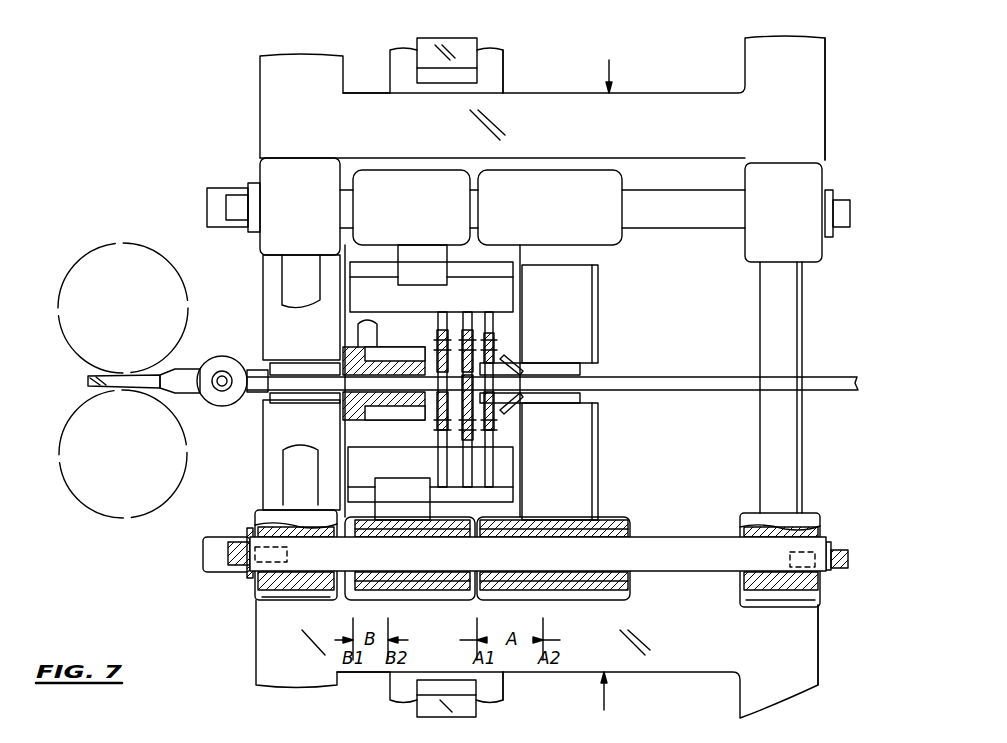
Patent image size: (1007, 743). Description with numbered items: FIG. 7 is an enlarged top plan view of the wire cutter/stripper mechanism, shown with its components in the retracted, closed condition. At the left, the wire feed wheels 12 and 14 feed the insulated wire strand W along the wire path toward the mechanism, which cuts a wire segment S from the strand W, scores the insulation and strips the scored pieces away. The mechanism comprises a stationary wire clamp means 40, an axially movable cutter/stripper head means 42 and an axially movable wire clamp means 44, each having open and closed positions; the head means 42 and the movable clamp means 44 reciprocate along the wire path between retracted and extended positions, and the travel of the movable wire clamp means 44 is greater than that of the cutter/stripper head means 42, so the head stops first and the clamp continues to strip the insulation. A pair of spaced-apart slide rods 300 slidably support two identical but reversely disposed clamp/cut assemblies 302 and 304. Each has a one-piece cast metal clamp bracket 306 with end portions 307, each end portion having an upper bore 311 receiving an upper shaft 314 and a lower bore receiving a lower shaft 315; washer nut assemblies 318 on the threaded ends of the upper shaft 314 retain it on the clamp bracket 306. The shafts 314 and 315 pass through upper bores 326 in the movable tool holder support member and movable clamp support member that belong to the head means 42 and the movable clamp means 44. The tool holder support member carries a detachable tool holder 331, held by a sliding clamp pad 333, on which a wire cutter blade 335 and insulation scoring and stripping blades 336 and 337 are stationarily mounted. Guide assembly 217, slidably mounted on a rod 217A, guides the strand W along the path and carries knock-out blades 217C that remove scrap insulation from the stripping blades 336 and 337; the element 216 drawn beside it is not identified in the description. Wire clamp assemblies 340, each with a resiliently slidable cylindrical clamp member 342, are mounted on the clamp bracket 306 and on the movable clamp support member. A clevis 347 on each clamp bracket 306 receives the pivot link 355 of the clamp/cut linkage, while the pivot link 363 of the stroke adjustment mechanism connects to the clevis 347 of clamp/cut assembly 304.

The wire feed wheel 12 is at (85, 502).
The wire feed wheel 14 is at (117, 246).
The insulated wire strand W is at (88, 381).
The wire segment S is at (707, 377).
The stationary wire clamp means 40 is at (290, 605).
The cutter/stripper head means 42 is at (470, 590).
The movable wire clamp means 44 is at (630, 600).
The knife blade 216 is at (195, 368).
The guide assembly 217 is at (290, 440).
The rod 217A is at (378, 347).
The knock-out blades 217C is at (498, 353).
The slide rods 300 is at (282, 274).
The clamp/cut assembly 302 is at (665, 680).
The clamp/cut assembly 304 is at (686, 86).
The clamp bracket 306 is at (590, 84).
The end portion 307 is at (826, 82).
The upper bore 311 is at (256, 578).
The upper shaft 314 is at (690, 228).
The lower shaft 315 is at (215, 188).
The washer nut assemblies 318 is at (850, 204).
The upper bore 326 is at (395, 590).
The tool holder 331 is at (427, 450).
The sliding clamp pad 333 is at (398, 286).
The wire cutter blade 335 is at (450, 330).
The insulation scoring and stripping blade 336 is at (474, 338).
The insulation scoring and stripping blade 337 is at (438, 322).
The wire clamp assembly 340 is at (263, 293).
The cylindrical clamp member 342 is at (262, 370).
The clevis 347 is at (505, 58).
The pivot link 355 is at (417, 712).
The pivot link 363 is at (417, 47).